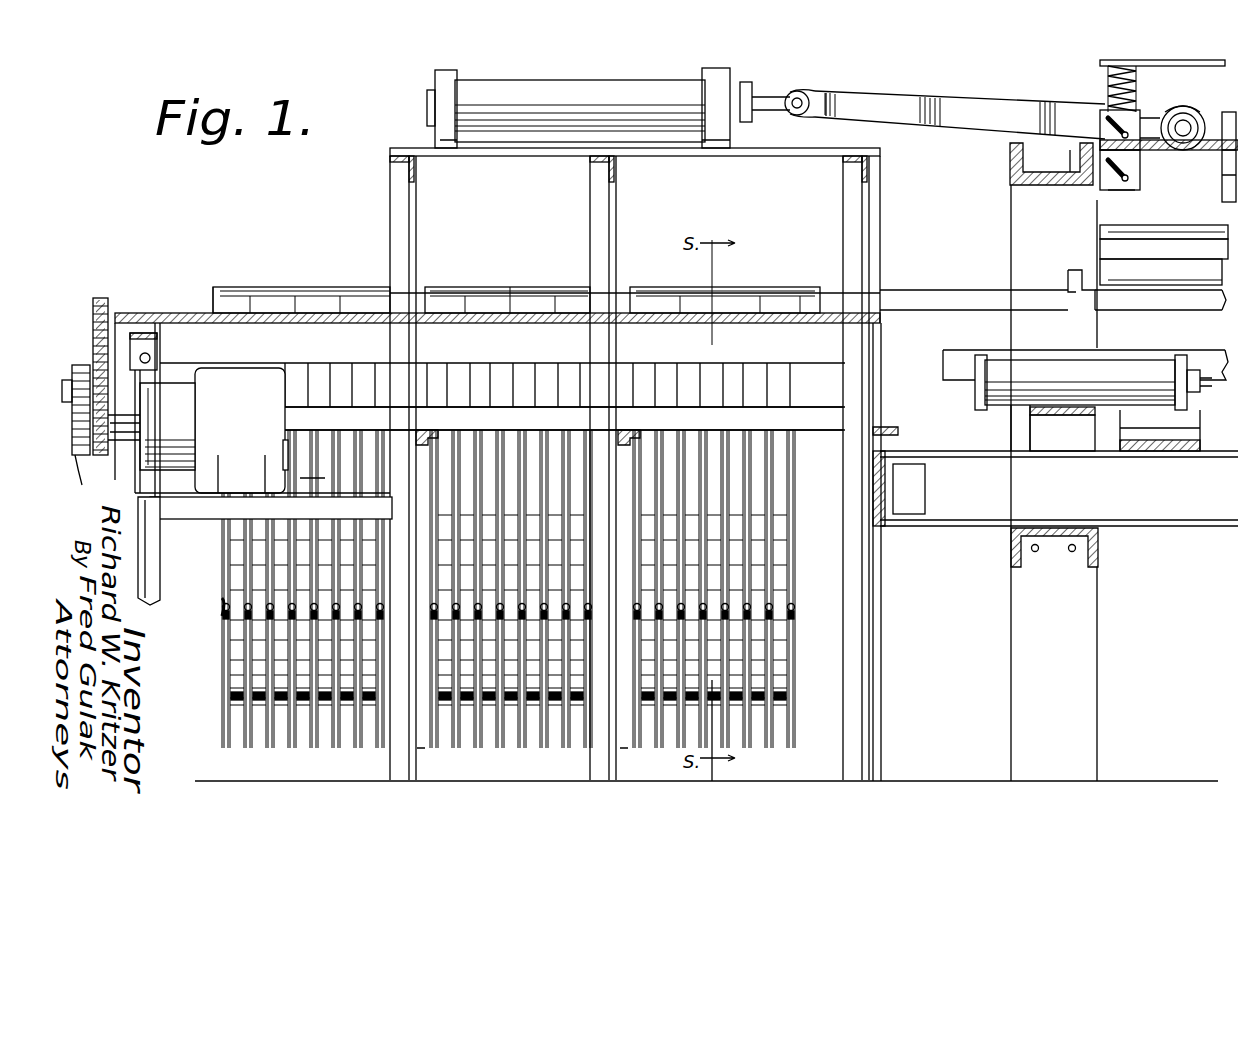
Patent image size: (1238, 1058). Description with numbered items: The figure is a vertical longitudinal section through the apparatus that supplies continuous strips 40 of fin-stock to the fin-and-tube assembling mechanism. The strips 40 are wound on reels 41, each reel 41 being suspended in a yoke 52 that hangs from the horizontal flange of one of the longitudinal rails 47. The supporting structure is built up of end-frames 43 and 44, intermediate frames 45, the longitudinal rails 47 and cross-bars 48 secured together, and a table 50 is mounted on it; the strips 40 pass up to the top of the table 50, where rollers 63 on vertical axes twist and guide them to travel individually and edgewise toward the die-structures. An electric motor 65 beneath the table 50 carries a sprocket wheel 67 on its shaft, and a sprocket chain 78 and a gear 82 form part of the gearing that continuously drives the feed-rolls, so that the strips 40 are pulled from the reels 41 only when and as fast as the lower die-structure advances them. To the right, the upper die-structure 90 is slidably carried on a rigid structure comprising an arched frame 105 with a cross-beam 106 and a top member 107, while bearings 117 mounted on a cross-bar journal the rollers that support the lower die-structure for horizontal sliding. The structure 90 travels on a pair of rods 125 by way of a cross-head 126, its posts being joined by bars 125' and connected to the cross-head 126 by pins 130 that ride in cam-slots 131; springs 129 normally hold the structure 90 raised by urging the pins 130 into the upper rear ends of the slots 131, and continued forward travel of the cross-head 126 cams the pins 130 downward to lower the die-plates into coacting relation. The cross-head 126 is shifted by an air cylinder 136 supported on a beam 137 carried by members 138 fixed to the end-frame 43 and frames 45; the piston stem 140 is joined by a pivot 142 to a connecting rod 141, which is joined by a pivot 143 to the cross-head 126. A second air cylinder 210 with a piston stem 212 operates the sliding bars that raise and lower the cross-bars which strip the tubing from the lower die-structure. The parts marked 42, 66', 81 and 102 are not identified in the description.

The strips of fin-stock 40 is at (290, 297).
The reels 41 is at (268, 662).
The support bracket 42 is at (1072, 416).
The end-frame 43 is at (875, 630).
The end-frame 44 is at (160, 560).
The intermediate frames 45 is at (425, 775).
The longitudinal rails 47 is at (822, 437).
The cross-bars 48 is at (432, 432).
The table 50 is at (505, 297).
The yoke 52 is at (220, 586).
The rollers 63 is at (745, 287).
The electric motor 65 is at (255, 424).
The shaft 66' is at (210, 470).
The sprocket wheel 67 is at (71, 479).
The sprocket chain 78 is at (80, 365).
The bearing bracket 81 is at (140, 330).
The gear 82 is at (106, 298).
The die-structure 90 is at (1098, 252).
The bracket 102 is at (1066, 272).
The arched frame 105 is at (1098, 695).
The cross-beam 106 is at (1055, 542).
The top member 107 is at (1045, 186).
The bearings 117 is at (1186, 500).
The rods 125 is at (1149, 169).
The bars 125' is at (1142, 48).
The cross-head 126 is at (1192, 116).
The springs 129 is at (1106, 82).
The pins 130 is at (1128, 182).
The cam-slots 131 is at (1152, 168).
The air cylinder 136 is at (605, 92).
The beam 137 is at (735, 158).
The members 138 is at (418, 232).
The stem 140 is at (792, 90).
The connecting rod 141 is at (960, 108).
The pivot 142 is at (838, 95).
The pivot 143 is at (1187, 108).
The air cylinder 210 is at (1055, 368).
The stem 212 is at (1210, 392).